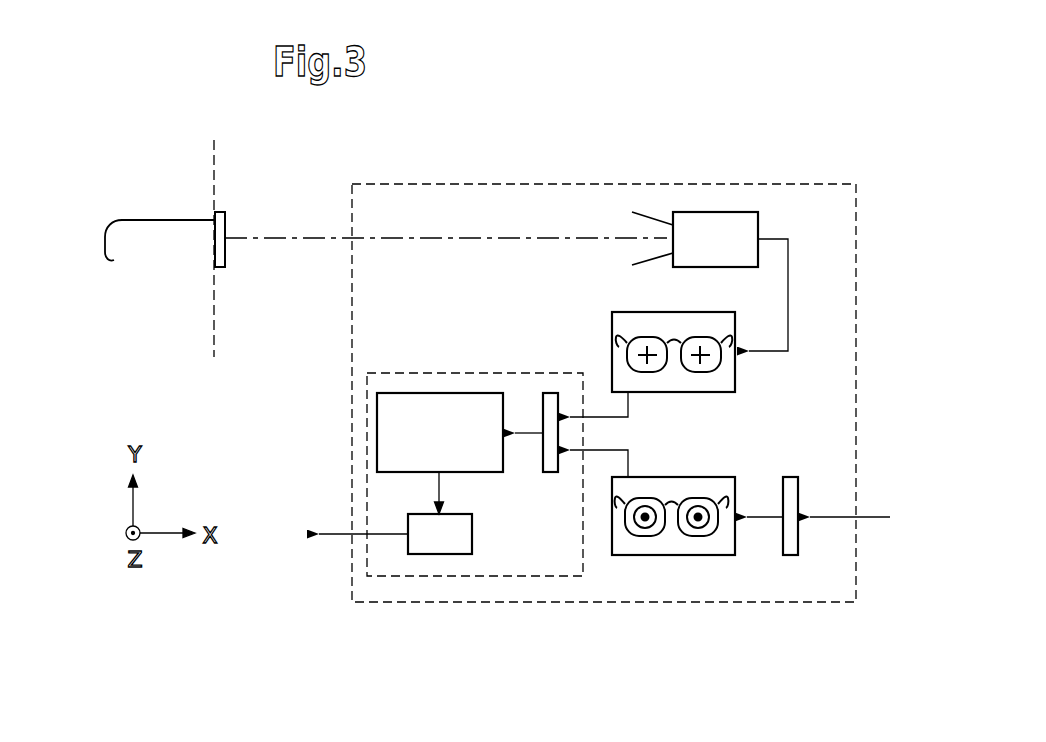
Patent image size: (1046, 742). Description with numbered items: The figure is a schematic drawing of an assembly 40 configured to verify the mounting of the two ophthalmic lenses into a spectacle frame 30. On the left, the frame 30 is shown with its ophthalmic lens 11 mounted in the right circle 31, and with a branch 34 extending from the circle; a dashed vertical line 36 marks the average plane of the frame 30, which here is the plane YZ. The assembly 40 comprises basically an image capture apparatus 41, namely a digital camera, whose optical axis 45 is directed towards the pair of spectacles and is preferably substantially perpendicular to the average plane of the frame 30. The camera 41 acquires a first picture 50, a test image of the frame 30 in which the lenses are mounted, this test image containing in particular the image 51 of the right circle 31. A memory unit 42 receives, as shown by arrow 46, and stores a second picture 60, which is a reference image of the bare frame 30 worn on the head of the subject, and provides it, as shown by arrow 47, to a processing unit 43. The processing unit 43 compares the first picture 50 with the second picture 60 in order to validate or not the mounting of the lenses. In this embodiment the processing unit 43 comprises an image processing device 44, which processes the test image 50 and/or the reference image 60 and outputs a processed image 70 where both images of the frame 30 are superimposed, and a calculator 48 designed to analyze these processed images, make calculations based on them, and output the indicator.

The ophthalmic lens 11 is at (223, 254).
The frame 30 is at (175, 244).
The right circle 31 is at (182, 258).
The branch 34 is at (158, 218).
The reference plane 36 is at (213, 158).
The assembly 40 is at (566, 185).
The image capture apparatus 41 is at (727, 212).
The memory unit 42 is at (789, 555).
The processing unit 43 is at (552, 576).
The image processing device 44 is at (552, 472).
The optical axis 45 is at (481, 238).
The arrow 46 is at (873, 512).
The arrow 47 is at (765, 517).
The calculator 48 is at (447, 554).
The first picture 50 is at (629, 363).
The image of right circle 51 is at (653, 357).
The second picture 60 is at (717, 473).
The processed image 70 is at (400, 392).